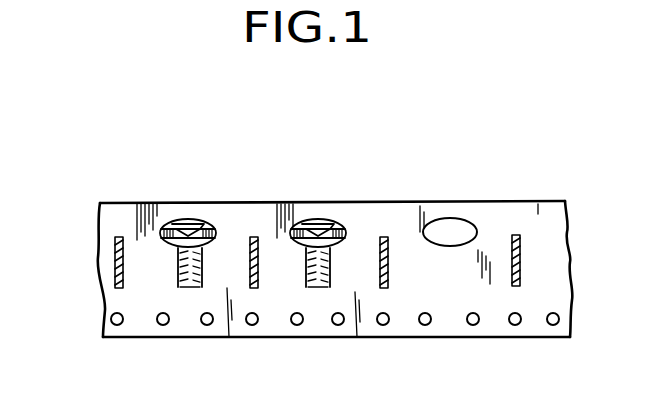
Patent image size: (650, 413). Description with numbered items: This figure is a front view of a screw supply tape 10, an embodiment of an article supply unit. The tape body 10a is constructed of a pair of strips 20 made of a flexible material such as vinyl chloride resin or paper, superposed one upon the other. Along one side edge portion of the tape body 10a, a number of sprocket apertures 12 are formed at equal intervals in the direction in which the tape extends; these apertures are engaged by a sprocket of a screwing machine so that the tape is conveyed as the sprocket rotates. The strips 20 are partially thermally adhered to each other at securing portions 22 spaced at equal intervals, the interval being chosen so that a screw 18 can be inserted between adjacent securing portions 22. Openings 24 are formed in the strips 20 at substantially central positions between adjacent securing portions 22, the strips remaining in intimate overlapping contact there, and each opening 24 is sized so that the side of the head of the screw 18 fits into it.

The screw supply tape 10 is at (300, 177).
The tape body 10a is at (542, 210).
The sprocket apertures 12 is at (517, 323).
The screw 18 is at (200, 222).
The strips 20 is at (567, 262).
The securing portions 22 is at (115, 257).
The openings 24 is at (448, 220).